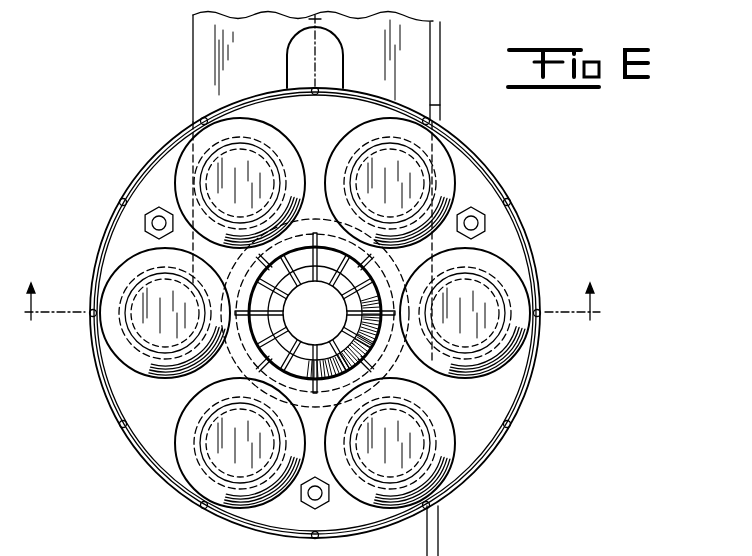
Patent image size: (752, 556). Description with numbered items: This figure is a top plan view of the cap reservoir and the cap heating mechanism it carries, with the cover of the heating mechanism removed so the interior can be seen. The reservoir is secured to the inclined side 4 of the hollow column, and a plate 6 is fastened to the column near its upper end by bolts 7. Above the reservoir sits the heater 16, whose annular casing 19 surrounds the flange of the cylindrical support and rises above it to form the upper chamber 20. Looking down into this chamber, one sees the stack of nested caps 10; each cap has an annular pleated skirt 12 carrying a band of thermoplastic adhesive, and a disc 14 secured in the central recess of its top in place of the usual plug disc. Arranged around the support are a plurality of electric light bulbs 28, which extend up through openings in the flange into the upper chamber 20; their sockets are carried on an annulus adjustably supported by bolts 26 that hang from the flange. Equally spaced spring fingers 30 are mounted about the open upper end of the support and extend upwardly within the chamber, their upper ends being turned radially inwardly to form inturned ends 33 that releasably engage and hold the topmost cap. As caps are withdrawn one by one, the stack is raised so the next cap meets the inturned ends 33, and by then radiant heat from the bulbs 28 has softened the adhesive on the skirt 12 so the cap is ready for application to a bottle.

The inclined side 4 is at (304, 19).
The plate 6 is at (442, 105).
The bolts 7 is at (312, 292).
The caps 10 is at (297, 255).
The annular pleated skirt 12 is at (367, 382).
The disc 14 is at (292, 333).
The heater 16 is at (147, 156).
The annular casing 19 is at (143, 460).
The upper chamber 20 is at (482, 185).
The bolts 26 is at (148, 232).
The electric light bulbs 28 is at (355, 127).
The spring fingers 30 is at (255, 258).
The inturned ends 33 is at (364, 258).